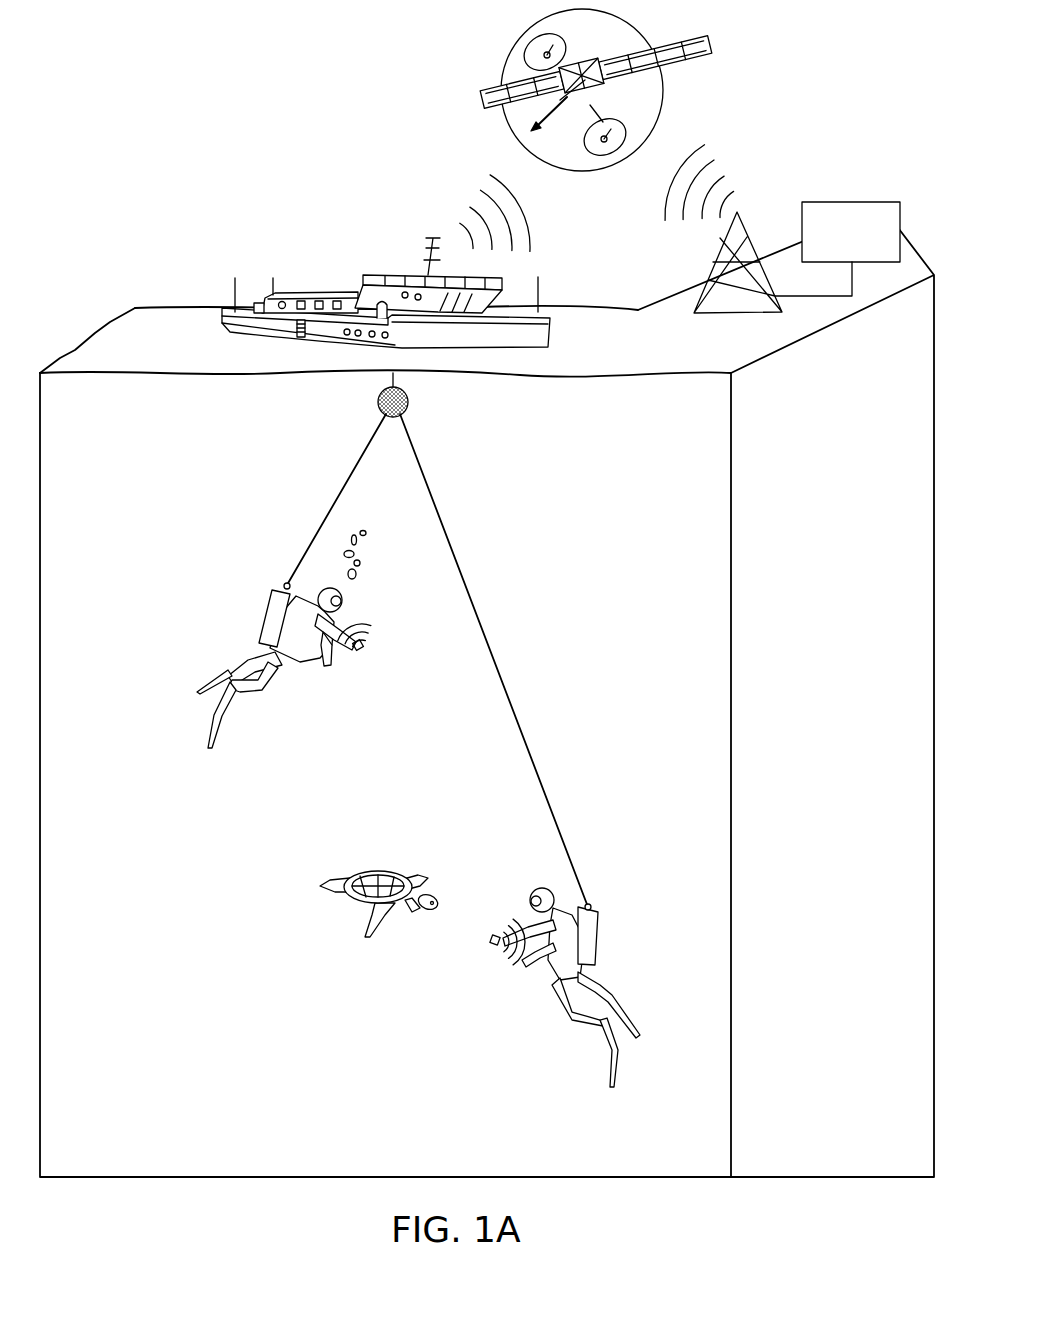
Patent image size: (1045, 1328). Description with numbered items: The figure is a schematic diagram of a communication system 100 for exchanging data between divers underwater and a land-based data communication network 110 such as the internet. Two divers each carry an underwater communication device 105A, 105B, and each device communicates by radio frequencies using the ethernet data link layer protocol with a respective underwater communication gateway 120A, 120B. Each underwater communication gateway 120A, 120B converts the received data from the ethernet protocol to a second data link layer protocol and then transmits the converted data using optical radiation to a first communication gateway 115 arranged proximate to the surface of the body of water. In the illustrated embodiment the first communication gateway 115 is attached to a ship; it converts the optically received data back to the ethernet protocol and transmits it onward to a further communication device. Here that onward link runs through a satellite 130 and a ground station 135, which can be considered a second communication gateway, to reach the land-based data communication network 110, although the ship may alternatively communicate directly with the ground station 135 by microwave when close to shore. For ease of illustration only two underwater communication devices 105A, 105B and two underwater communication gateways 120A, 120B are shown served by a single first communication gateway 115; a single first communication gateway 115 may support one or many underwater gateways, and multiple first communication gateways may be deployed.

The communication system 100 is at (795, 48).
The first underwater communication device 105A is at (495, 937).
The second underwater communication device 105B is at (400, 616).
The land-based data communication network 110 is at (853, 202).
The first communication gateway 115 is at (380, 407).
The underwater communication gateway 120A is at (600, 912).
The underwater communication gateway 120B is at (287, 584).
The satellite 130 is at (494, 88).
The ground station 135 is at (743, 293).